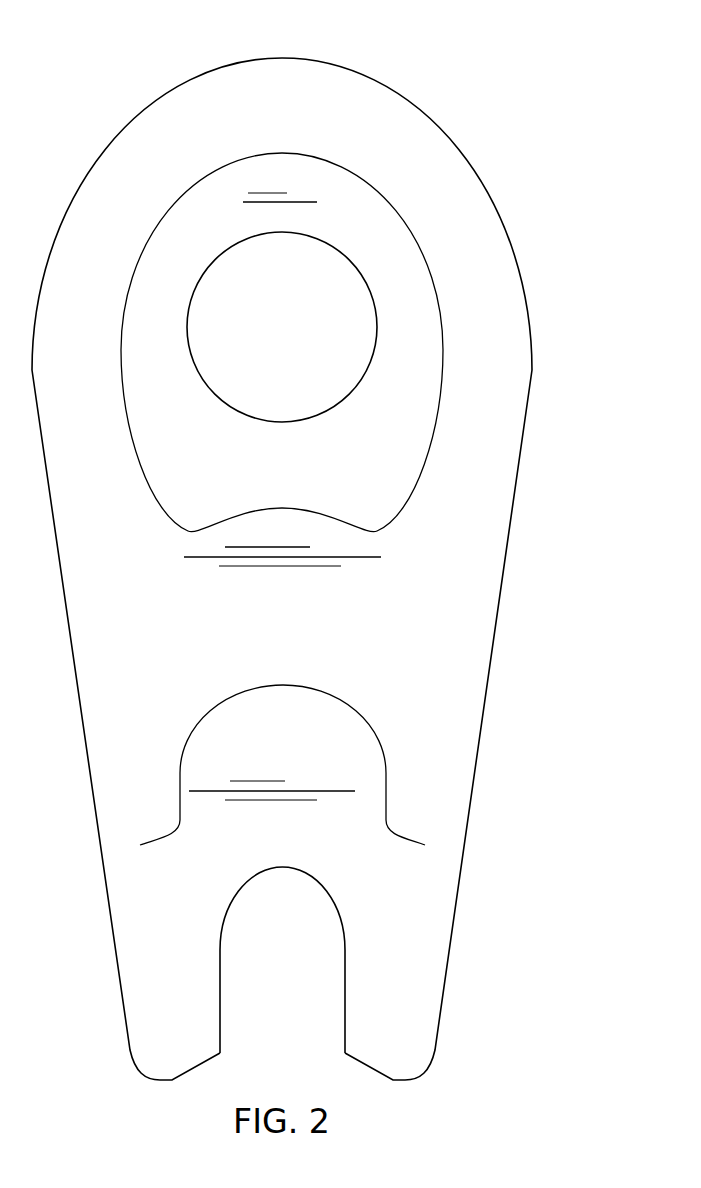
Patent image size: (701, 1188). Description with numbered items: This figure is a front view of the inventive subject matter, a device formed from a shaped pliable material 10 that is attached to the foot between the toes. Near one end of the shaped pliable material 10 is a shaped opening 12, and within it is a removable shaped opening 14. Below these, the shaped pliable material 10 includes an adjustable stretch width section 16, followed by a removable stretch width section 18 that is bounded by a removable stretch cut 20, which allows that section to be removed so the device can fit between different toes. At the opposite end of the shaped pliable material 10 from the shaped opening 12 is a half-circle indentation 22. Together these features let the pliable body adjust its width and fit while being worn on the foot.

The shaped pliable material 10 is at (372, 124).
The shaped opening 12 is at (408, 228).
The removable shaped opening 14 is at (407, 348).
The adjustable stretch width section 16 is at (325, 603).
The removable stretch width section 18 is at (306, 737).
The removable stretch cut 20 is at (386, 812).
The half-circle indentation 22 is at (287, 963).